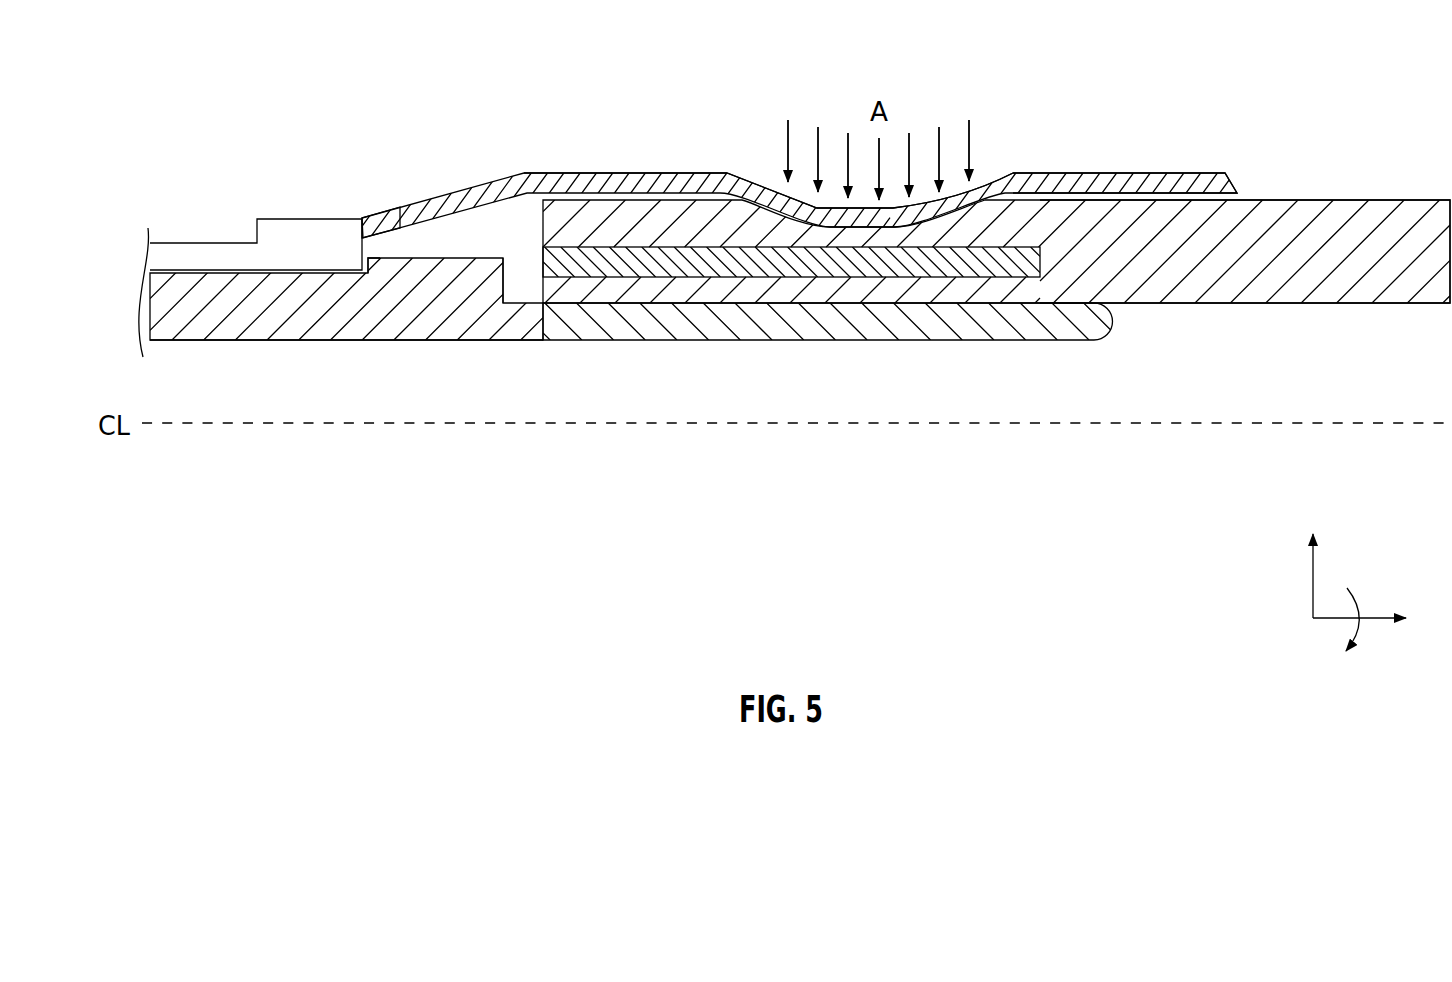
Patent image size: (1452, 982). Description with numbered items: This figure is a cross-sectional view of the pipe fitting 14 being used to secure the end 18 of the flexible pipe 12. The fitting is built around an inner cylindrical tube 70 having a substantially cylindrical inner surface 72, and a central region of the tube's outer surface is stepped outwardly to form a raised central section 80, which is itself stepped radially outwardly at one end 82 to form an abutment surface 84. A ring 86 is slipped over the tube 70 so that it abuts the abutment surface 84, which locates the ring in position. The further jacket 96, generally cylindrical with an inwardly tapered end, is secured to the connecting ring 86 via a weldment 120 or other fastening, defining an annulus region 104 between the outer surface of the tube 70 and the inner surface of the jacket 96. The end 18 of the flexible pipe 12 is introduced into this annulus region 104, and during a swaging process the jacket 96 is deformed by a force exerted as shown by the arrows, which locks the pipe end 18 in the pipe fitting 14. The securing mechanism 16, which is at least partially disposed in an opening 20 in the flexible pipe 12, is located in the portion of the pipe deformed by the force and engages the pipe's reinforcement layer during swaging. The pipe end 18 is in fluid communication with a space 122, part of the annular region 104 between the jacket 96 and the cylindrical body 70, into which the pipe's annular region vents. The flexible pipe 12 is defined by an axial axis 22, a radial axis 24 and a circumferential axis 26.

The pipe fitting 14 is at (183, 103).
The flexible pipe 12 is at (1309, 290).
The securing mechanism 16 is at (548, 243).
The end of the flexible pipe 18 is at (703, 194).
The opening in the flexible pipe 20 is at (627, 246).
The axial axis 22 is at (1377, 623).
The radial axis 24 is at (1310, 583).
The circumferential axis 26 is at (1355, 600).
The inner cylindrical tube 70 is at (840, 321).
The inner surface 72 is at (452, 342).
The raised central section 80 is at (152, 305).
The end of the raised portion 82 is at (473, 257).
The abutment surface 84 is at (369, 273).
The ring 86 is at (288, 217).
The further jacket 96 is at (608, 173).
The annulus region 104 is at (1240, 194).
The weldment 120 is at (366, 217).
The space 122 is at (517, 215).